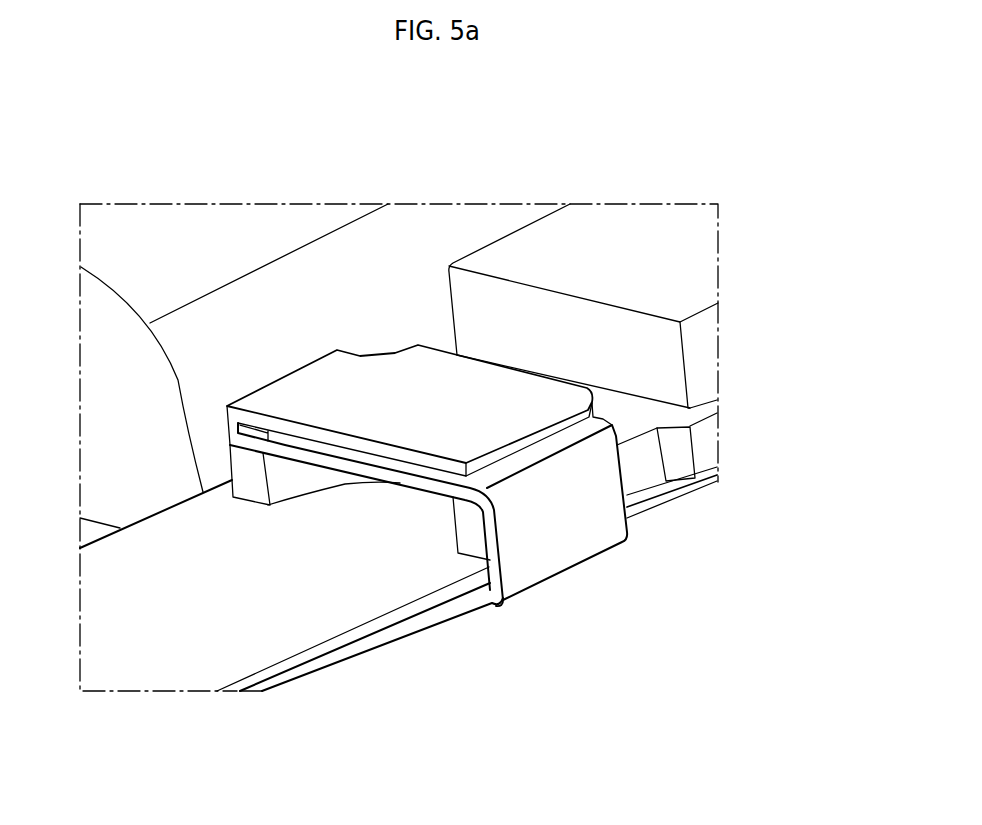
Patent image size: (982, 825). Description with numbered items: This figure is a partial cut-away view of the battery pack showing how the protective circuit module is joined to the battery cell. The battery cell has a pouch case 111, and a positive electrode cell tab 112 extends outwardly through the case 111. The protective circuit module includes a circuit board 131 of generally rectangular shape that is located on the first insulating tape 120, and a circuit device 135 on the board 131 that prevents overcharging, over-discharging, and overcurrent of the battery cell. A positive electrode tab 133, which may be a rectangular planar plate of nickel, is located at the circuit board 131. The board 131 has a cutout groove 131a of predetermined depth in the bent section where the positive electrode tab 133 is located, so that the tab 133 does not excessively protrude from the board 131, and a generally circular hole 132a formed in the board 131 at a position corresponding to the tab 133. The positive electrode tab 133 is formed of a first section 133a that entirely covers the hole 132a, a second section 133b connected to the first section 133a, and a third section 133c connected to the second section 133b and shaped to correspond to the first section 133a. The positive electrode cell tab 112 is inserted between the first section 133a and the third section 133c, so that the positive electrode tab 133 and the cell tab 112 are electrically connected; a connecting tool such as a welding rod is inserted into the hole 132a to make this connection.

The pouch case 111 is at (117, 218).
The positive electrode cell tab 112 is at (567, 553).
The first insulating tape 120 is at (287, 672).
The circuit board 131 is at (705, 442).
The cutout groove 131a is at (645, 478).
The hole 132a is at (398, 512).
The positive electrode tab 133 is at (197, 122).
The first section 133a is at (283, 453).
The second section 133b is at (230, 428).
The third section 133c is at (357, 440).
The circuit device 135 is at (685, 270).